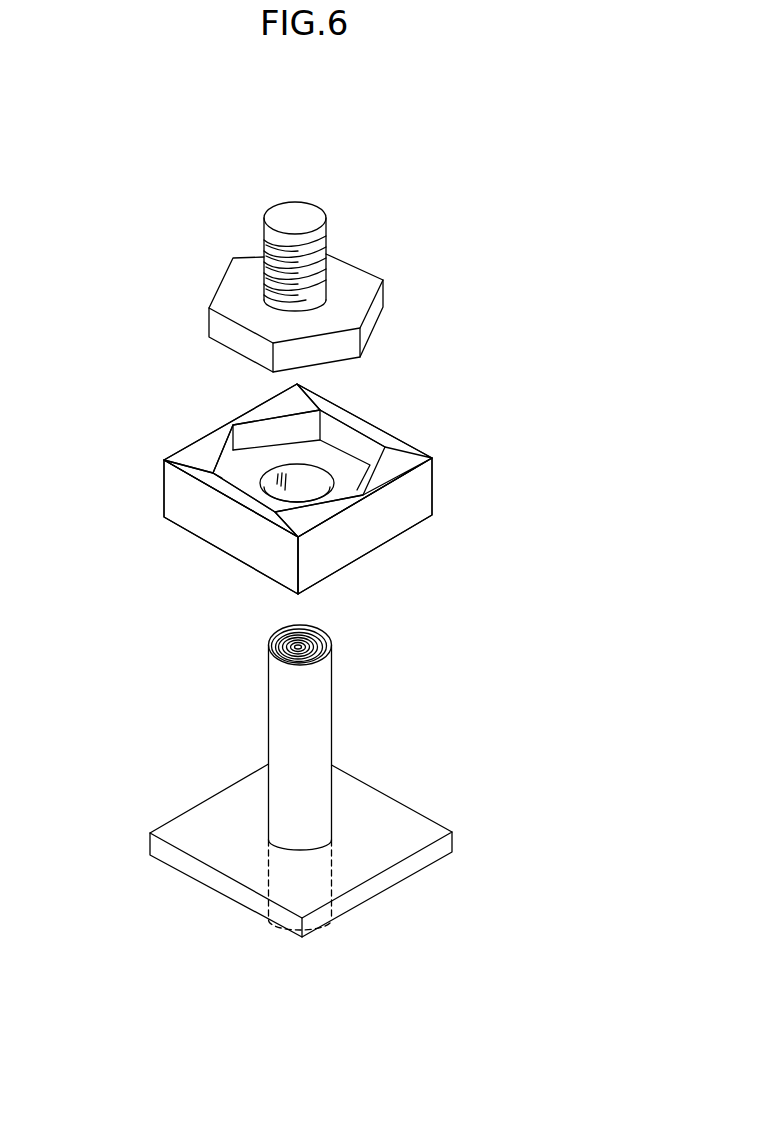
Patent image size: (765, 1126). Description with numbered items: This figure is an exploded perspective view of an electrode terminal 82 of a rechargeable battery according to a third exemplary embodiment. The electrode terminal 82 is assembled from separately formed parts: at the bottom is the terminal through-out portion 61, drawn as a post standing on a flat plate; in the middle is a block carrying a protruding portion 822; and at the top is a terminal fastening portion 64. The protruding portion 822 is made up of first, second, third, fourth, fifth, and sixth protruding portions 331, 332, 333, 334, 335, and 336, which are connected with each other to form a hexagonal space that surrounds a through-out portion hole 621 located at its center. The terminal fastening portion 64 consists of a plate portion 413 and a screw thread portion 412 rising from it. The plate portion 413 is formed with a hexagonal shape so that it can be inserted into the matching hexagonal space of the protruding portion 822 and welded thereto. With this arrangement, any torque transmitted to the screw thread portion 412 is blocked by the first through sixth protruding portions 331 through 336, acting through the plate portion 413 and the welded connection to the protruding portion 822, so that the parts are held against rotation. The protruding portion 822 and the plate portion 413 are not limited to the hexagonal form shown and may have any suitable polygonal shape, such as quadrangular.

The electrode terminal 82 is at (310, 118).
The terminal fastening portion 64 is at (188, 283).
The screw thread portion 412 is at (318, 237).
The plate portion 413 is at (358, 290).
The protruding portion 822 is at (582, 358).
The first protruding portion 331 is at (220, 495).
The second protruding portion 332 is at (368, 430).
The third protruding portion 333 is at (307, 515).
The fourth protruding portion 334 is at (243, 413).
The fifth protruding portion 335 is at (397, 460).
The sixth protruding portion 336 is at (193, 452).
The through-out portion hole 621 is at (303, 495).
The terminal through-out portion 61 is at (456, 810).